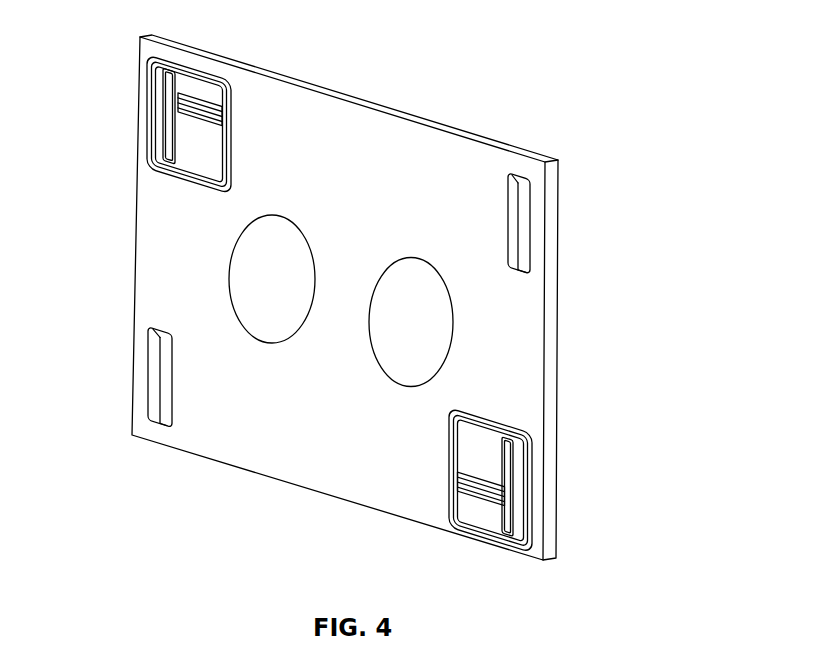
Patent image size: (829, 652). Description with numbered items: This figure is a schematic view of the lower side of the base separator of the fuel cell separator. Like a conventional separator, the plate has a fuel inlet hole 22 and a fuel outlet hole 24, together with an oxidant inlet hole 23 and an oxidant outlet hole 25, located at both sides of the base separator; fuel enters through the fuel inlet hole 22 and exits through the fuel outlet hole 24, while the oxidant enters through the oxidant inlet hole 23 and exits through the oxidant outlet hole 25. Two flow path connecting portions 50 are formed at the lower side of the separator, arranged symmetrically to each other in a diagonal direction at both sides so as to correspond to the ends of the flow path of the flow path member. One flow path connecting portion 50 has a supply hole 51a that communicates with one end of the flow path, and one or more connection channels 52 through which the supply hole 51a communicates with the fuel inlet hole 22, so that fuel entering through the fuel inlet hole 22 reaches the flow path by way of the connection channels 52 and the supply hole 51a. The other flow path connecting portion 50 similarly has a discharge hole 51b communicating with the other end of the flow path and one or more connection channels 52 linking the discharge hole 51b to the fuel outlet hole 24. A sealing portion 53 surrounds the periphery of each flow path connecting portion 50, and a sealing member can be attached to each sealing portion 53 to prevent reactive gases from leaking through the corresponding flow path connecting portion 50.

The fuel inlet hole 22 is at (518, 473).
The oxidant inlet hole 23 is at (525, 216).
The fuel outlet hole 24 is at (170, 138).
The oxidant outlet hole 25 is at (155, 383).
The flow path connecting portion 50 is at (233, 90).
The supply hole 51a is at (458, 490).
The discharge hole 51b is at (220, 115).
The connection channel 52 is at (181, 101).
The sealing portion 53 is at (177, 173).